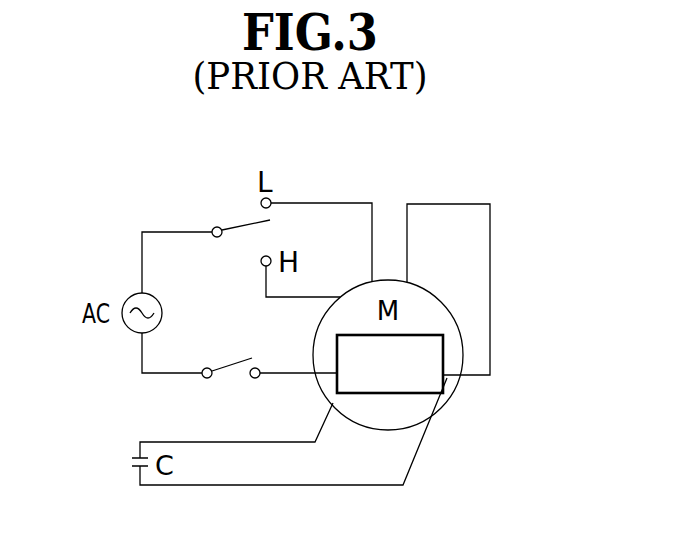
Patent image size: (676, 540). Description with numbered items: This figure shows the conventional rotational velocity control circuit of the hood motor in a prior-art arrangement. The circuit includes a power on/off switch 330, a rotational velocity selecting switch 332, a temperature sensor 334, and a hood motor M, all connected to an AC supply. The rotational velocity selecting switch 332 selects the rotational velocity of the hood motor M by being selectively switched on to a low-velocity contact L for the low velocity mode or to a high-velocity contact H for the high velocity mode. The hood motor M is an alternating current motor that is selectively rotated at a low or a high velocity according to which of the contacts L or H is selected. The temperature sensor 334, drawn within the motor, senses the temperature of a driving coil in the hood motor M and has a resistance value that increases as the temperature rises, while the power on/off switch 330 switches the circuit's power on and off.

The power on/off switch 330 is at (230, 365).
The rotational velocity selecting switch 332 is at (243, 222).
The temperature sensor 334 is at (443, 358).